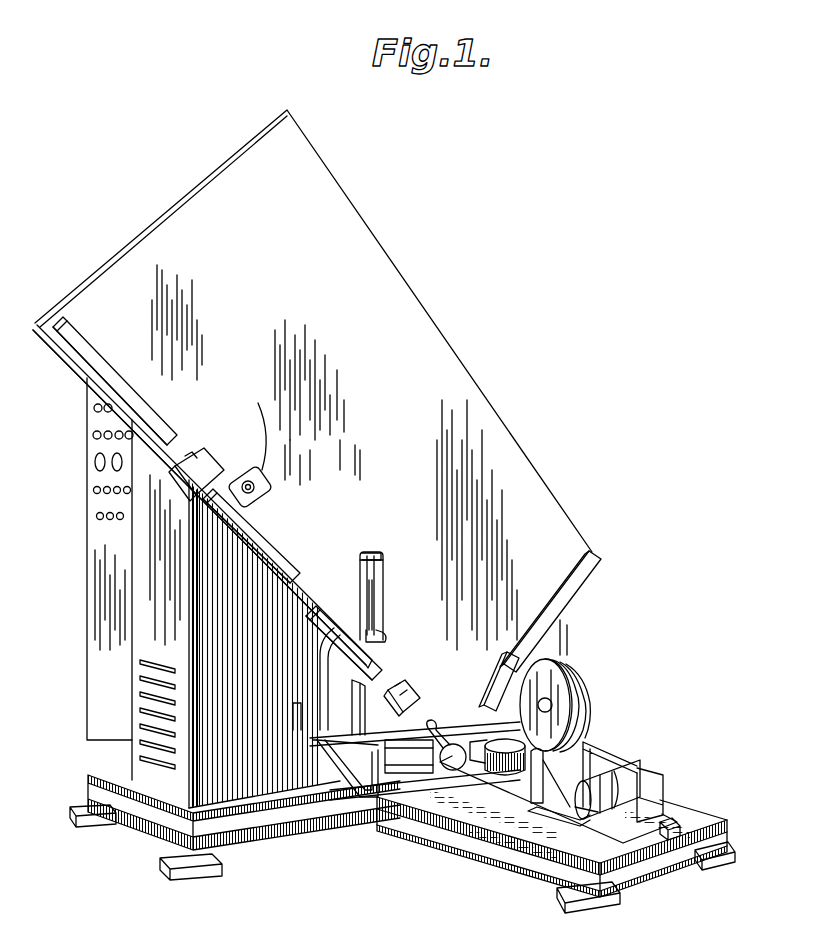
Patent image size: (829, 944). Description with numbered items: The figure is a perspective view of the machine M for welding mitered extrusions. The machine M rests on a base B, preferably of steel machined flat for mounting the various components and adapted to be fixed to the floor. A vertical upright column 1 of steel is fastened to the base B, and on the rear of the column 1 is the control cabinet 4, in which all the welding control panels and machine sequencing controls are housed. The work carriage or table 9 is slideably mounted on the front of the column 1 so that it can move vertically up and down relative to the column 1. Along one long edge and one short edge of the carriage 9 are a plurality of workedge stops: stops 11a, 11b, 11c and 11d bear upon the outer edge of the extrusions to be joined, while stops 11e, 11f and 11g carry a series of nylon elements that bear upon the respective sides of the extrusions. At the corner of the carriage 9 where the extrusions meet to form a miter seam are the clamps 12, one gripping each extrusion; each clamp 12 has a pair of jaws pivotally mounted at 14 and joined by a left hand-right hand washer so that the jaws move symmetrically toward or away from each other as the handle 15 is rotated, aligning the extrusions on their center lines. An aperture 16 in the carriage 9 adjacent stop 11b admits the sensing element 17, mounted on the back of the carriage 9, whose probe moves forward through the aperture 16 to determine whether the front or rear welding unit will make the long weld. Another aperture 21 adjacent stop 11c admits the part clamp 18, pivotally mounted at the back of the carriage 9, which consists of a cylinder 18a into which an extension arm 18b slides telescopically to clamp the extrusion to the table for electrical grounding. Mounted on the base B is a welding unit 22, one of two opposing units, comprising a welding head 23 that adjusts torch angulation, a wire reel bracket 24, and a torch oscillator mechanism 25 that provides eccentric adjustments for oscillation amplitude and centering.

The machine M is at (420, 292).
The vertical upright column 1 is at (134, 747).
The control cabinet 4 is at (97, 544).
The work carriage 9 is at (492, 445).
The workedge stop 11a is at (84, 343).
The workedge stop 11b is at (255, 537).
The workedge stop 11c is at (333, 618).
The workedge stop 11d is at (568, 590).
The workedge stop 11e is at (200, 462).
The workedge stop 11f is at (405, 700).
The workedge stop 11g is at (508, 665).
The clamp 12 is at (425, 772).
The pivot 14 is at (397, 770).
The handle 15 is at (447, 730).
The aperture 16 is at (268, 493).
The sensing element 17 is at (260, 426).
The part clamp 18 is at (378, 634).
The cylinder 18a is at (376, 566).
The extension arm 18b is at (374, 609).
The aperture 21 is at (386, 577).
The welding unit 22 is at (594, 689).
The welding head 23 is at (500, 753).
The wire reel bracket 24 is at (592, 703).
The torch oscillator mechanism 25 is at (640, 778).
The base B is at (686, 802).